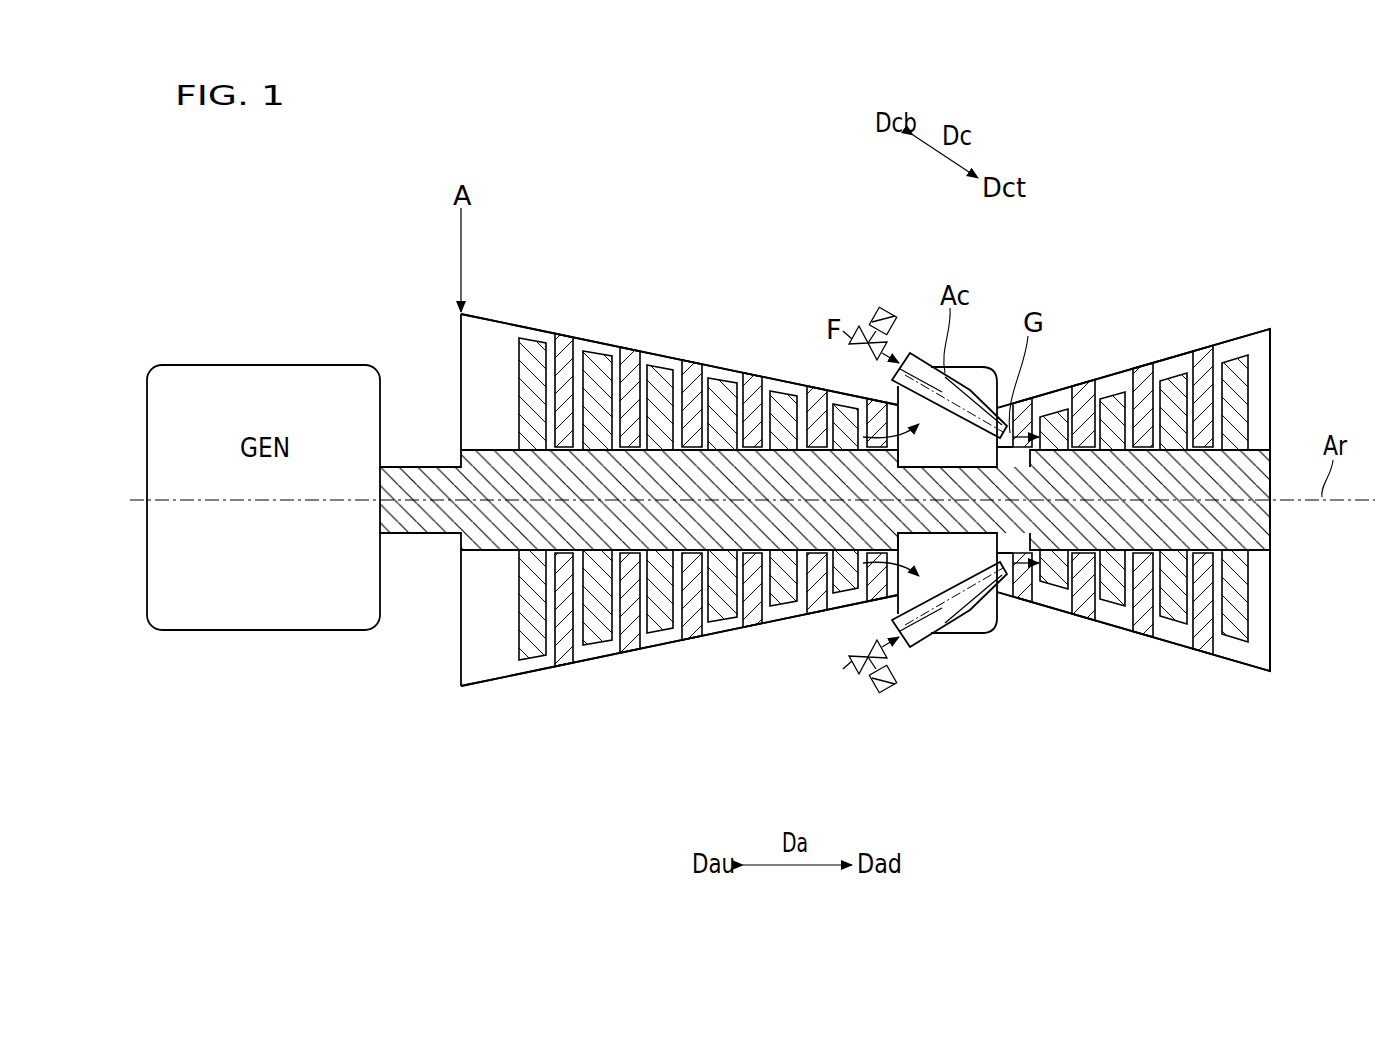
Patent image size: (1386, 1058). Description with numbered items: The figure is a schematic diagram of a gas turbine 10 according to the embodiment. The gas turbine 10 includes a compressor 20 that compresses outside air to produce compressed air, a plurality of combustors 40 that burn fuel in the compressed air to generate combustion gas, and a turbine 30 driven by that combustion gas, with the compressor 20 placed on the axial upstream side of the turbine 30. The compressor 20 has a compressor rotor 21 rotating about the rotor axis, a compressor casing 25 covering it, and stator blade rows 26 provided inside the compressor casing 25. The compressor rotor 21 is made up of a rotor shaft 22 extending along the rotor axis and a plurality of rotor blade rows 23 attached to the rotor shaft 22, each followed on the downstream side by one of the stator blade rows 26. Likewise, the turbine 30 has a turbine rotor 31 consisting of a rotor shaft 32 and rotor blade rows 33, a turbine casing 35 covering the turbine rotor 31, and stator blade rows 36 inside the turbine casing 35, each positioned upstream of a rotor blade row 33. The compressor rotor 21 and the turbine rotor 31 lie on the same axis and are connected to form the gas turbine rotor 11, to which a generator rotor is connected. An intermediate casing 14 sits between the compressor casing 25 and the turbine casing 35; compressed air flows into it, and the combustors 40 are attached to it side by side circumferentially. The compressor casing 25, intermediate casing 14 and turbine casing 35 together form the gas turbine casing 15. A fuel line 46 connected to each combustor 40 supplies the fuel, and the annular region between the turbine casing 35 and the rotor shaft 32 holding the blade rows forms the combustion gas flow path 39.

The gas turbine 10 is at (1286, 291).
The gas turbine rotor 11 is at (848, 581).
The intermediate casing 14 is at (967, 365).
The gas turbine casing 15 is at (993, 627).
The compressor 20 is at (679, 489).
The compressor rotor 21 is at (639, 581).
The rotor shaft 22 is at (493, 540).
The rotor blade rows 23 is at (603, 633).
The compressor casing 25 is at (547, 333).
The stator blade rows 26 is at (689, 637).
The turbine 30 is at (1133, 482).
The turbine rotor 31 is at (1173, 576).
The rotor shaft 32 is at (1270, 623).
The rotor blade rows 33 is at (1149, 550).
The turbine casing 35 is at (1223, 342).
The stator blade rows 36 is at (1150, 625).
The combustion gas flow path 39 is at (1173, 393).
The combustor 40 is at (920, 345).
The fuel line 46 is at (850, 327).